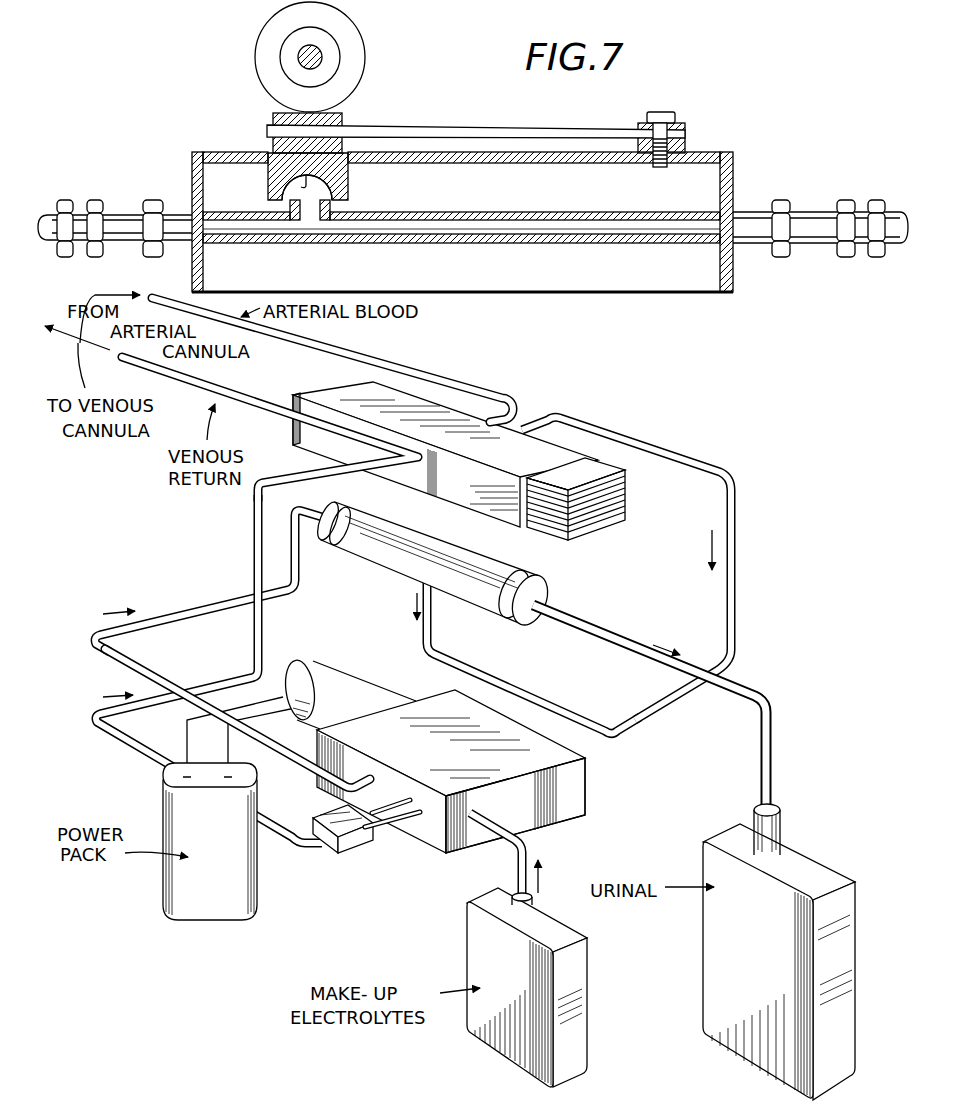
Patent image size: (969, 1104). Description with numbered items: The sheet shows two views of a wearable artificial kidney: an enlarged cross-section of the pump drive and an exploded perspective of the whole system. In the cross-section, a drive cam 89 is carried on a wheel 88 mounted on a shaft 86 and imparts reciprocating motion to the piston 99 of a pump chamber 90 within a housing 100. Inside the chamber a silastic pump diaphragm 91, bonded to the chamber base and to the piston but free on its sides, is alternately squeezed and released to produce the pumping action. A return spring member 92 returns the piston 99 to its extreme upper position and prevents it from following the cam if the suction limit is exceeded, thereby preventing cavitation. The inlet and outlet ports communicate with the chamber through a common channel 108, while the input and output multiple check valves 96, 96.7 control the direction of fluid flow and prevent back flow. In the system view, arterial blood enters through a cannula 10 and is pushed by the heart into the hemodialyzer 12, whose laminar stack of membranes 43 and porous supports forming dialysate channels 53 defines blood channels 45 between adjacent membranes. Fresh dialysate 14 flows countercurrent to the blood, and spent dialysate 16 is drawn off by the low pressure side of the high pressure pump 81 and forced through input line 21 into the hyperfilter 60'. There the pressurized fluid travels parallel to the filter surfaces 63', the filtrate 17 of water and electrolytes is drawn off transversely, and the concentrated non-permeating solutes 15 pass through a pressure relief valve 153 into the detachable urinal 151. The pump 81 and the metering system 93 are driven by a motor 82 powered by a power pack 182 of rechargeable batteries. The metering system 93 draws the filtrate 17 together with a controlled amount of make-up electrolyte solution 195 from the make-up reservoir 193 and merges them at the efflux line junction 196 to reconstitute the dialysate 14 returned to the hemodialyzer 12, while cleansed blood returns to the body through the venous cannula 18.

In FIG. 8, the cannula 10 is at (389, 368).
In FIG. 8, the hemodialyzer 12 is at (472, 450).
In FIG. 8, the fresh dialysate 14 is at (253, 527).
In FIG. 8, the non-permeating solutes 15 is at (771, 762).
In FIG. 8, the spent dialysate 16 is at (738, 573).
In FIG. 8, the filtrate 17 is at (418, 588).
In FIG. 8, the venous cannula 18 is at (279, 420).
In FIG. 8, the input line 21 is at (270, 727).
In FIG. 8, the membranes 43 is at (624, 470).
In FIG. 8, the blood channel 45 is at (672, 505).
In FIG. 8, the dialysate channels 53 is at (628, 478).
In FIG. 8, the hyperfilter 60' is at (426, 561).
In FIG. 8, the filter surfaces 63' is at (539, 593).
In FIG. 8, the high pressure pump 81 is at (451, 771).
In FIG. 8, the motor 82 is at (352, 688).
In FIG. 7, the shaft 86 is at (320, 63).
In FIG. 7, the wheel 88 is at (353, 62).
In FIG. 7, the drive cam 89 is at (320, 40).
In FIG. 7, the pump chamber 90 is at (287, 187).
In FIG. 7, the pump diaphragm 91 is at (350, 184).
In FIG. 7, the return spring member 92 is at (588, 128).
In FIG. 8, the metering system 93 is at (559, 800).
In FIG. 7, the check valve 96 is at (100, 210).
In FIG. 7, the check valve 96.7 is at (877, 253).
In FIG. 7, the piston 99 is at (273, 143).
In FIG. 7, the housing 100 is at (193, 253).
In FIG. 7, the common channel 108 is at (390, 230).
In FIG. 8, the detachable urinal 151 is at (762, 975).
In FIG. 8, the pressure relief valve 153 is at (778, 833).
In FIG. 8, the power pack 182 is at (223, 856).
In FIG. 8, the make-up reservoir 193 is at (525, 1003).
In FIG. 8, the make-up electrolyte solution 195 is at (503, 834).
In FIG. 8, the efflux line junction 196 is at (333, 846).